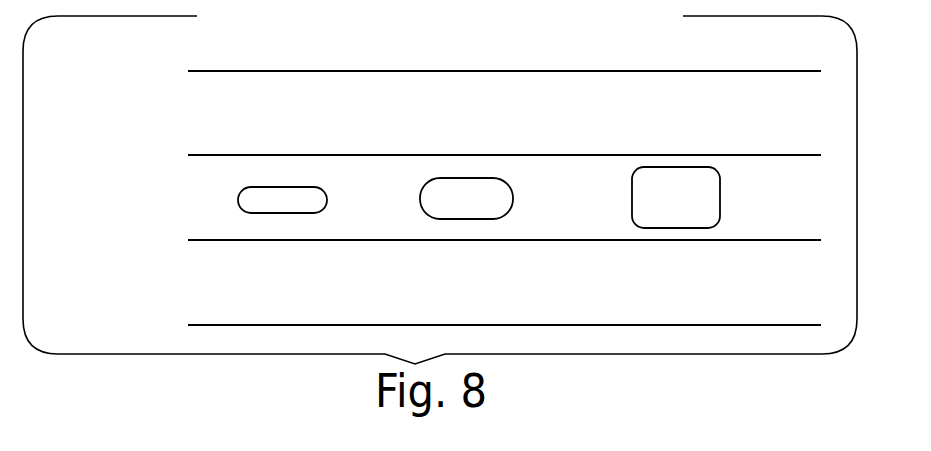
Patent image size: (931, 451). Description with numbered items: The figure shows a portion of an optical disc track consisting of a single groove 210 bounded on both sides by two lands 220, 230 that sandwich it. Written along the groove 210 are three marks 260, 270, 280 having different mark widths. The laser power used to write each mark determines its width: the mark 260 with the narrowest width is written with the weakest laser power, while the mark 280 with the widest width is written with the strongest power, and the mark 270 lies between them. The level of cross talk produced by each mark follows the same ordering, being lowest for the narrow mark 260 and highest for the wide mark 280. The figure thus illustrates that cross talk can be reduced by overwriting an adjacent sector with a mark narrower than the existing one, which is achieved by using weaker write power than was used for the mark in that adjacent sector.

The groove 210 is at (178, 226).
The land 220 is at (178, 141).
The land 230 is at (184, 296).
The mark 260 is at (302, 213).
The mark 270 is at (487, 219).
The mark 280 is at (680, 228).